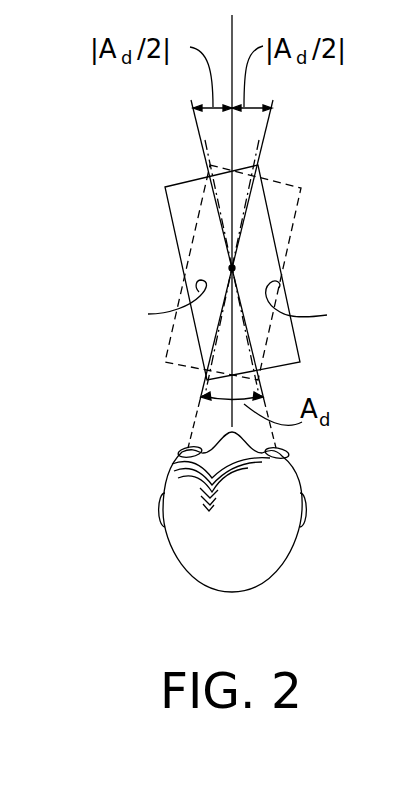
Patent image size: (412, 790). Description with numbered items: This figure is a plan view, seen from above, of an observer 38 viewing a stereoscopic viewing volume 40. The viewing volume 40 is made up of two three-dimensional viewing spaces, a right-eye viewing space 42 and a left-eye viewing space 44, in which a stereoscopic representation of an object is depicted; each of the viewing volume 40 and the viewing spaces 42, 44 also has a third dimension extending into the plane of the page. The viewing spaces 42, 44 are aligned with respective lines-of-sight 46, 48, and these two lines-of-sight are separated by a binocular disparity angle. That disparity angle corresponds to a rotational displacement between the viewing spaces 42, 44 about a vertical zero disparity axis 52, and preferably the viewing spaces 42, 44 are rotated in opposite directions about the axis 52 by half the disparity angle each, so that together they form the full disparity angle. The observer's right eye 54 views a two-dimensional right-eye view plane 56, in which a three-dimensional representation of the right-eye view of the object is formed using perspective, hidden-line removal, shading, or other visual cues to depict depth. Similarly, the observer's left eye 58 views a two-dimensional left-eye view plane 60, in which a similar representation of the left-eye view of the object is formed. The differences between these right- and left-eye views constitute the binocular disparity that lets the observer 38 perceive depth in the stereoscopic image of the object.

The observer 38 is at (165, 533).
The stereoscopic viewing volume 40 is at (260, 279).
The right-eye viewing space 42 is at (182, 255).
The left-eye viewing space 44 is at (294, 235).
The line-of-sight 46 is at (205, 146).
The line-of-sight 48 is at (259, 146).
The vertical zero disparity axis 52 is at (234, 268).
The right eye 54 is at (284, 452).
The right-eye view plane 56 is at (159, 304).
The left eye 58 is at (189, 447).
The left-eye view plane 60 is at (313, 305).